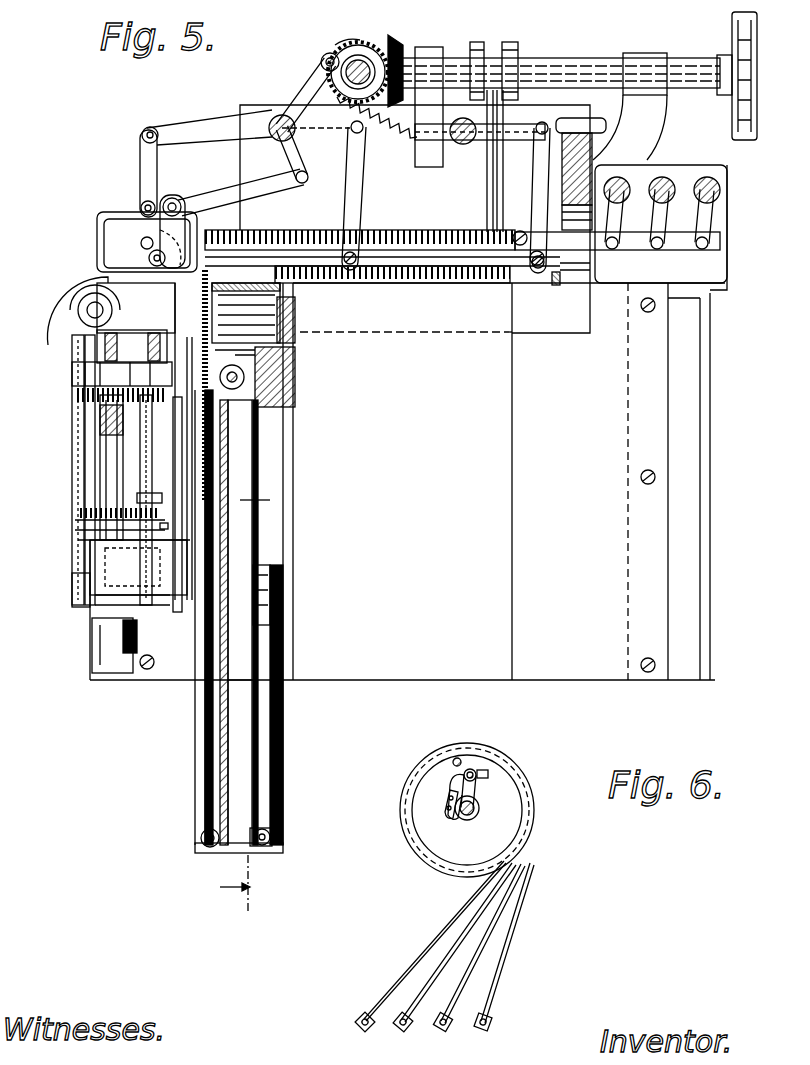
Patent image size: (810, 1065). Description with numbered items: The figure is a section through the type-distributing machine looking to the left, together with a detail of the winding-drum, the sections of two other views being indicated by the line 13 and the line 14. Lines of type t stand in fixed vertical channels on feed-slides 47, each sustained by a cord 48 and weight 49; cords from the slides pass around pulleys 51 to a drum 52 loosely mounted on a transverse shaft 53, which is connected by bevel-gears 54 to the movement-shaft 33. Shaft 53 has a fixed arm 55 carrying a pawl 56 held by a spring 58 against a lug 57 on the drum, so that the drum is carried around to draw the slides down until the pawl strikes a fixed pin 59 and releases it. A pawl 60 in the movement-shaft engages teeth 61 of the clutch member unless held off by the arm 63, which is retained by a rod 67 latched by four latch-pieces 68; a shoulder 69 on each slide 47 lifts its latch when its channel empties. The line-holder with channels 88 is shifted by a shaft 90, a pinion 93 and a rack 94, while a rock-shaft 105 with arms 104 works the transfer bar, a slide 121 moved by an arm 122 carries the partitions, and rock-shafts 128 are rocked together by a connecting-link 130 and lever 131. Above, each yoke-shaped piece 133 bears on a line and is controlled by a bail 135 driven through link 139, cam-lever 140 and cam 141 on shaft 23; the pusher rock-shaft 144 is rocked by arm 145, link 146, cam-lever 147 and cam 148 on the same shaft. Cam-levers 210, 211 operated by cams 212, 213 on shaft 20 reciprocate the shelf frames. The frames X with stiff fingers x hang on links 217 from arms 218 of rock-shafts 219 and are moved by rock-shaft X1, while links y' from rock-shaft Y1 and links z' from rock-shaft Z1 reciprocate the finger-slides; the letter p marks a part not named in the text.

In FIG. 5, the shaft 20 is at (570, 68).
In FIG. 5, the shaft 23 is at (362, 55).
In FIG. 5, the cam 141 is at (342, 46).
In FIG. 5, the cam 148 is at (320, 55).
In FIG. 5, the cam-lever 147 is at (210, 130).
In FIG. 5, the link 146 is at (152, 165).
In FIG. 5, the arm 145 is at (160, 196).
In FIG. 5, the rock-shaft 144 is at (182, 204).
In FIG. 5, the bail 135 is at (160, 238).
In FIG. 5, the yoke-shaped piece 133 is at (210, 246).
In FIG. 5, the cam-lever 140 is at (296, 150).
In FIG. 5, the link 139 is at (251, 192).
In FIG. 5, the rock-shaft 219 is at (450, 133).
In FIG. 5, the link 217 is at (358, 205).
In FIG. 5, the arm 218 is at (512, 128).
In FIG. 5, the cam 213 is at (478, 45).
In FIG. 5, the cam 212 is at (516, 46).
In FIG. 5, the cam-lever 211 is at (487, 200).
In FIG. 5, the cam-lever 210 is at (499, 210).
In FIG. 5, the rock-shaft Z1 is at (620, 178).
In FIG. 5, the rock-shaft Y1 is at (663, 178).
In FIG. 5, the rock-shaft X1 is at (720, 188).
In FIG. 5, the fingers x is at (700, 246).
In FIG. 5, the links z' is at (611, 260).
In FIG. 5, the links y' is at (645, 260).
In FIG. 5, the frame X is at (415, 280).
In FIG. 5, the plate p is at (167, 350).
In FIG. 5, the type t is at (198, 307).
In FIG. 5, the arm 63 is at (123, 378).
In FIG. 5, the section line 14 is at (75, 363).
In FIG. 5, the section line 13 is at (335, 433).
In FIG. 5, the pawl 60 is at (80, 372).
In FIG. 5, the teeth 61 is at (77, 390).
In FIG. 5, the shaft 90 is at (135, 445).
In FIG. 5, the movement-shaft 33 is at (105, 470).
In FIG. 5, the rack 94 is at (110, 488).
In FIG. 5, the pinion 93 is at (125, 502).
In FIG. 5, the rock-shaft 105 is at (75, 517).
In FIG. 5, the lever 131 is at (80, 542).
In FIG. 5, the channel 88 is at (176, 480).
In FIG. 5, the rock-shaft 128 is at (160, 489).
In FIG. 5, the connecting-link 130 is at (171, 517).
In FIG. 5, the slide 121 is at (168, 574).
In FIG. 5, the arm 122 is at (170, 592).
In FIG. 5, the arm 104 is at (72, 605).
In FIG. 5, the bevel-gears 54 is at (123, 635).
In FIG. 5, the transverse shaft 53 is at (200, 714).
In FIG. 6, the transverse shaft 53 is at (479, 808).
In FIG. 5, the drum 52 is at (285, 697).
In FIG. 6, the drum 52 is at (540, 788).
In FIG. 5, the pulleys 51 is at (208, 843).
In FIG. 6, the pulleys 51 is at (406, 1030).
In FIG. 5, the latch-piece 68 is at (295, 352).
In FIG. 5, the rod 67 is at (262, 368).
In FIG. 5, the feed-slide 47 is at (323, 483).
In FIG. 5, the cord 48 is at (270, 500).
In FIG. 5, the shoulder 69 is at (210, 525).
In FIG. 5, the weight 49 is at (250, 550).
In FIG. 5, the fixed pin 59 is at (260, 583).
In FIG. 6, the fixed pin 59 is at (459, 758).
In FIG. 5, the pawl 56 is at (282, 597).
In FIG. 6, the pawl 56 is at (445, 778).
In FIG. 5, the fixed arm 55 is at (272, 620).
In FIG. 6, the spring 58 is at (486, 770).
In FIG. 6, the lug 57 is at (442, 812).